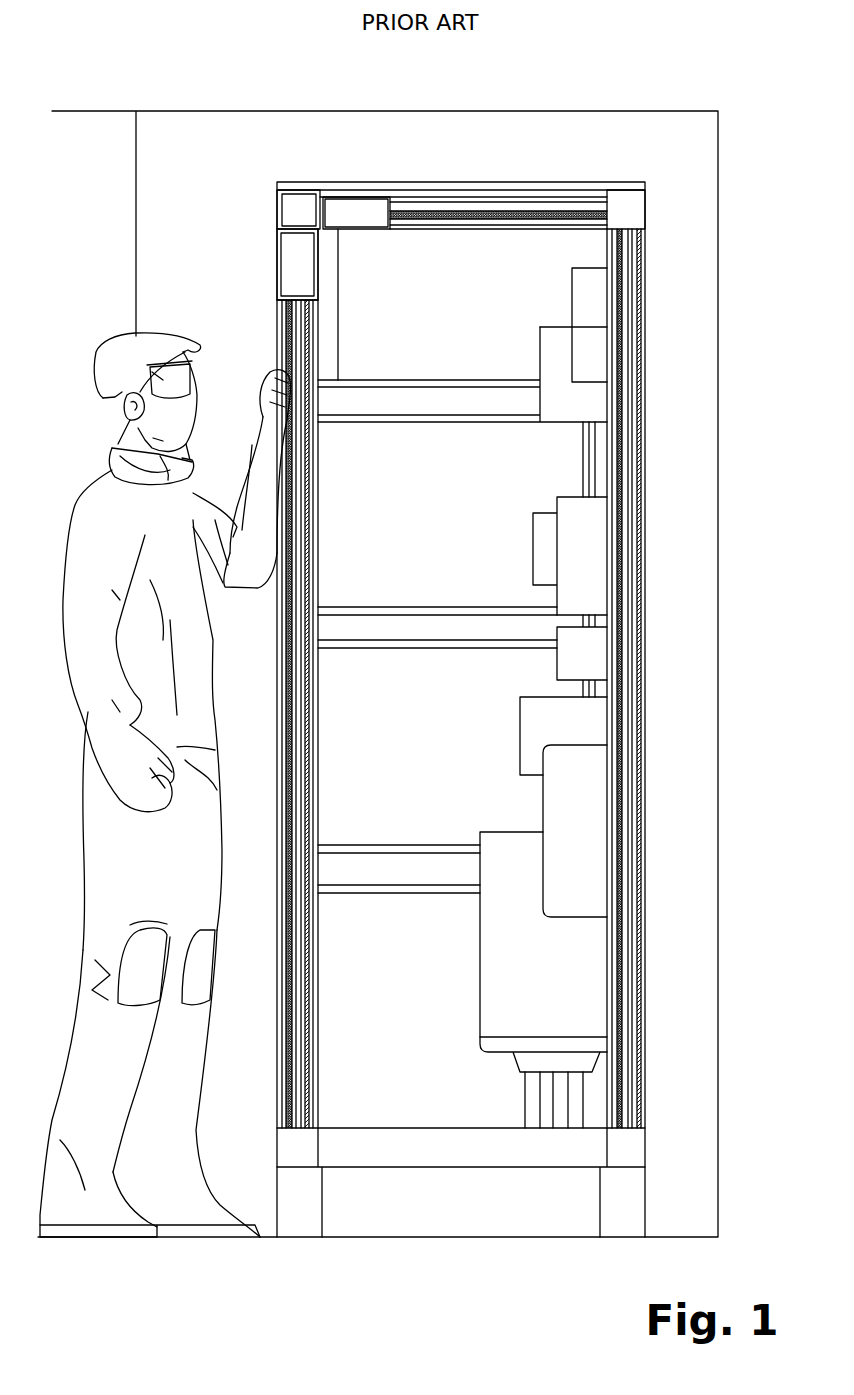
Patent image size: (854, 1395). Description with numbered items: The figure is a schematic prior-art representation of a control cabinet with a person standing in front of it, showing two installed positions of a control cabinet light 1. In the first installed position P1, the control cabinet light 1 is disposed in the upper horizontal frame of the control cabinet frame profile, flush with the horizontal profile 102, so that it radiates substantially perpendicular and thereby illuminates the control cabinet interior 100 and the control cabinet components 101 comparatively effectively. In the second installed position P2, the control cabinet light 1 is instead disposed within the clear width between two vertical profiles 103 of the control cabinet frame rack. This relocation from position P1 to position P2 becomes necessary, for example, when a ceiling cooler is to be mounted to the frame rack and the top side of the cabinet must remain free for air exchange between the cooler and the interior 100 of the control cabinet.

The control cabinet interior 100 is at (503, 258).
The control cabinet components 101 is at (596, 324).
The horizontal profile 102 is at (480, 214).
The vertical profiles 103 is at (283, 312).
The control cabinet light 1 is at (386, 212).
The first installed position P1 is at (338, 212).
The second installed position P2 is at (289, 275).